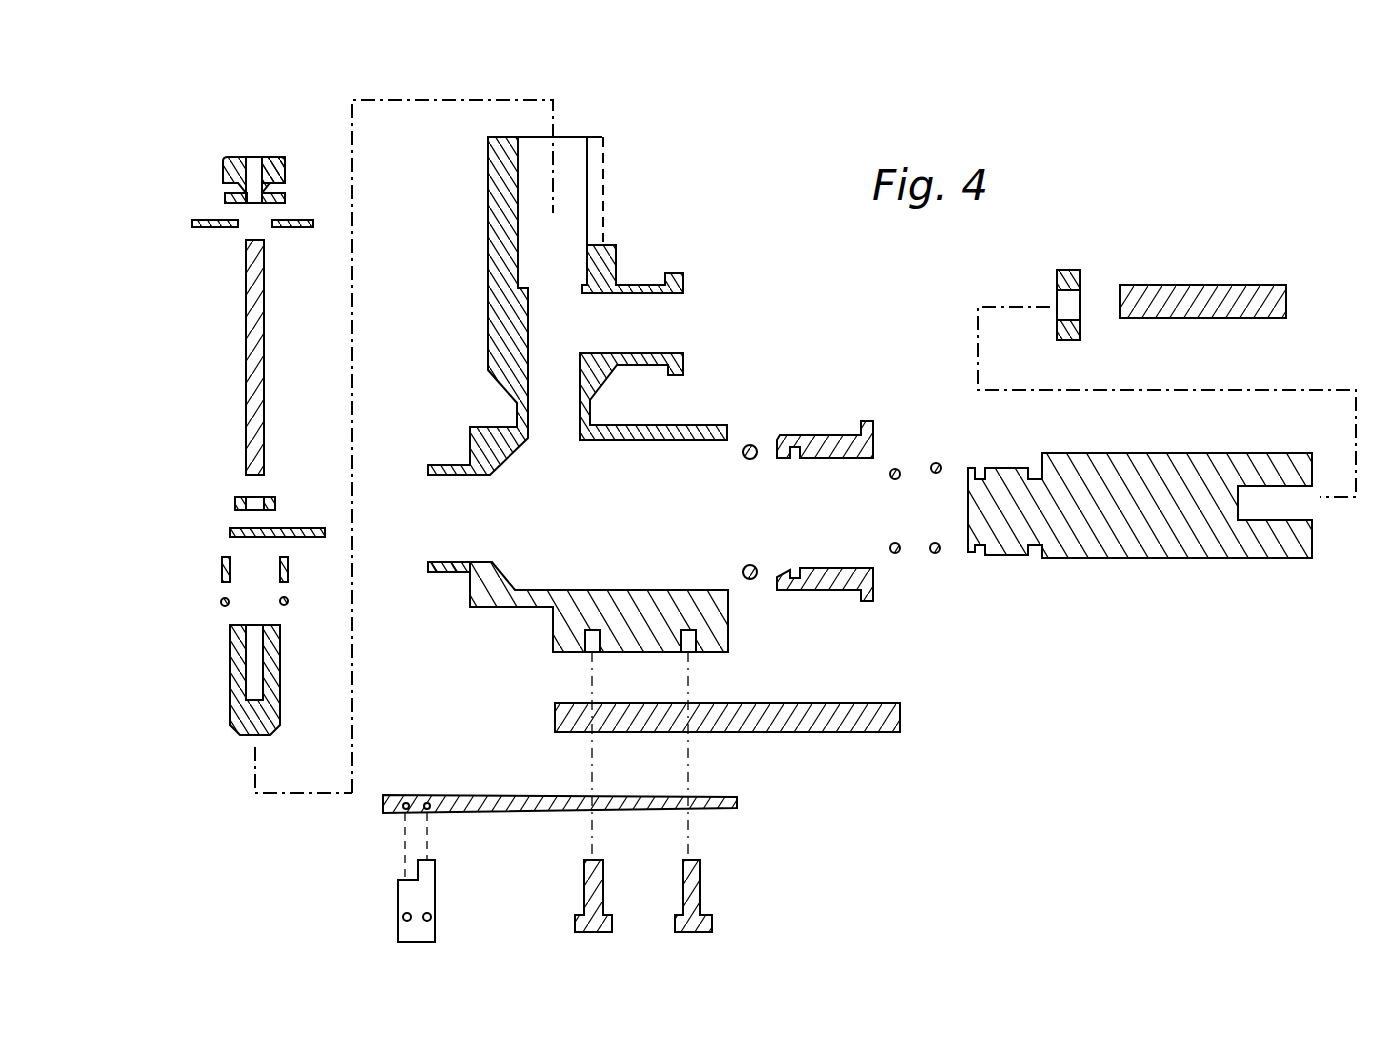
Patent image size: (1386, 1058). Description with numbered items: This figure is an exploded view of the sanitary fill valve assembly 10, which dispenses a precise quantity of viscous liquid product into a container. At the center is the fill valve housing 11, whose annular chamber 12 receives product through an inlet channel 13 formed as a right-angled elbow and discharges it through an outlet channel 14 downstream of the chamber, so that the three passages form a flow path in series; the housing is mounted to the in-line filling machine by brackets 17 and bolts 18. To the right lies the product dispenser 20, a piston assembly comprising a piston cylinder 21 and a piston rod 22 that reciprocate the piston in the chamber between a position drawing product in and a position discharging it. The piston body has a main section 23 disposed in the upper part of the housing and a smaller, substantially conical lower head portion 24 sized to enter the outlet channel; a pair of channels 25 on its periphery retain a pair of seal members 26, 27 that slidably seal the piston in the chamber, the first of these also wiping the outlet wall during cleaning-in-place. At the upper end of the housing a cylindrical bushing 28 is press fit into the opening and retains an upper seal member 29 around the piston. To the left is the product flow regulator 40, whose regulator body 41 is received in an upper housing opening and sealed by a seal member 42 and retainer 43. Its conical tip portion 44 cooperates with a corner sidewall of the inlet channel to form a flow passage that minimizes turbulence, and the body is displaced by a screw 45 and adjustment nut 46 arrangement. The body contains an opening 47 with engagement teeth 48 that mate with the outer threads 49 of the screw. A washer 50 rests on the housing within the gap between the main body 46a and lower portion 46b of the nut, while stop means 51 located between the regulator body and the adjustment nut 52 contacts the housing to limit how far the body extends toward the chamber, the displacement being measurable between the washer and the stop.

The sanitary fill valve assembly 10 is at (772, 286).
The fill valve housing 11 is at (728, 640).
The annular chamber 12 is at (577, 531).
The inlet channel 13 is at (645, 286).
The outlet channel 14 is at (447, 578).
The bracket 17 is at (900, 718).
The bolts 18 is at (612, 928).
The product dispenser 20 is at (1230, 575).
The piston cylinder 21 is at (1068, 560).
The piston rod 22 is at (1240, 284).
The main section 23 is at (1108, 453).
The lower head portion 24 is at (1000, 556).
The channels 25 is at (975, 472).
The seal member 26 is at (897, 555).
The seal member 27 is at (938, 553).
The cylindrical bushing 28 is at (850, 590).
The upper seal member 29 is at (755, 442).
The product flow regulator 40 is at (266, 92).
The regulator body 41 is at (230, 700).
The seal member 42 is at (220, 602).
The retainer 43 is at (222, 565).
The tip portion 44 is at (230, 735).
The screw 45 is at (246, 392).
The adjustment nut 46 is at (223, 172).
The main body 46a is at (286, 172).
The lower portion 46b is at (290, 199).
The opening 47 is at (257, 628).
The engagement teeth 48 is at (252, 676).
The outer threads 49 is at (264, 440).
The washer 50 is at (192, 222).
The stop means 51 is at (232, 533).
The adjustment nut 52 is at (240, 500).